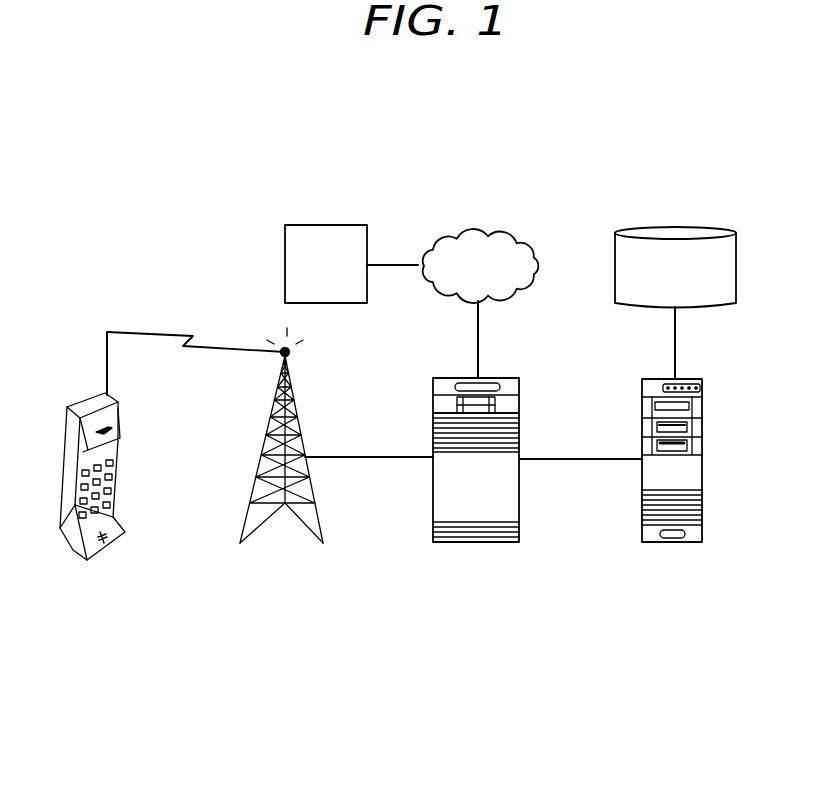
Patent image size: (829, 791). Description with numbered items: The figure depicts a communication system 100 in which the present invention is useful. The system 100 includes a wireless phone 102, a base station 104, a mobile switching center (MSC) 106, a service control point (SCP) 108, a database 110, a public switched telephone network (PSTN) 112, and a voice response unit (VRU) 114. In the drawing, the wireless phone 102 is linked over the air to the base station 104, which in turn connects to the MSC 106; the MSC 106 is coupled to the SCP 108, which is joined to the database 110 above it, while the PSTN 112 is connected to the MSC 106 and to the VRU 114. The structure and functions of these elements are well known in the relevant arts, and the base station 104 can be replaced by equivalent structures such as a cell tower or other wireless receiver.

The system 100 is at (118, 186).
The wireless phone 102 is at (116, 405).
The base station 104 is at (306, 449).
The mobile switching center (MSC) 106 is at (499, 378).
The service control point (SCP) 108 is at (697, 378).
The database 110 is at (677, 226).
The public switched telephone network (PSTN) 112 is at (489, 232).
The voice response unit (VRU) 114 is at (329, 224).